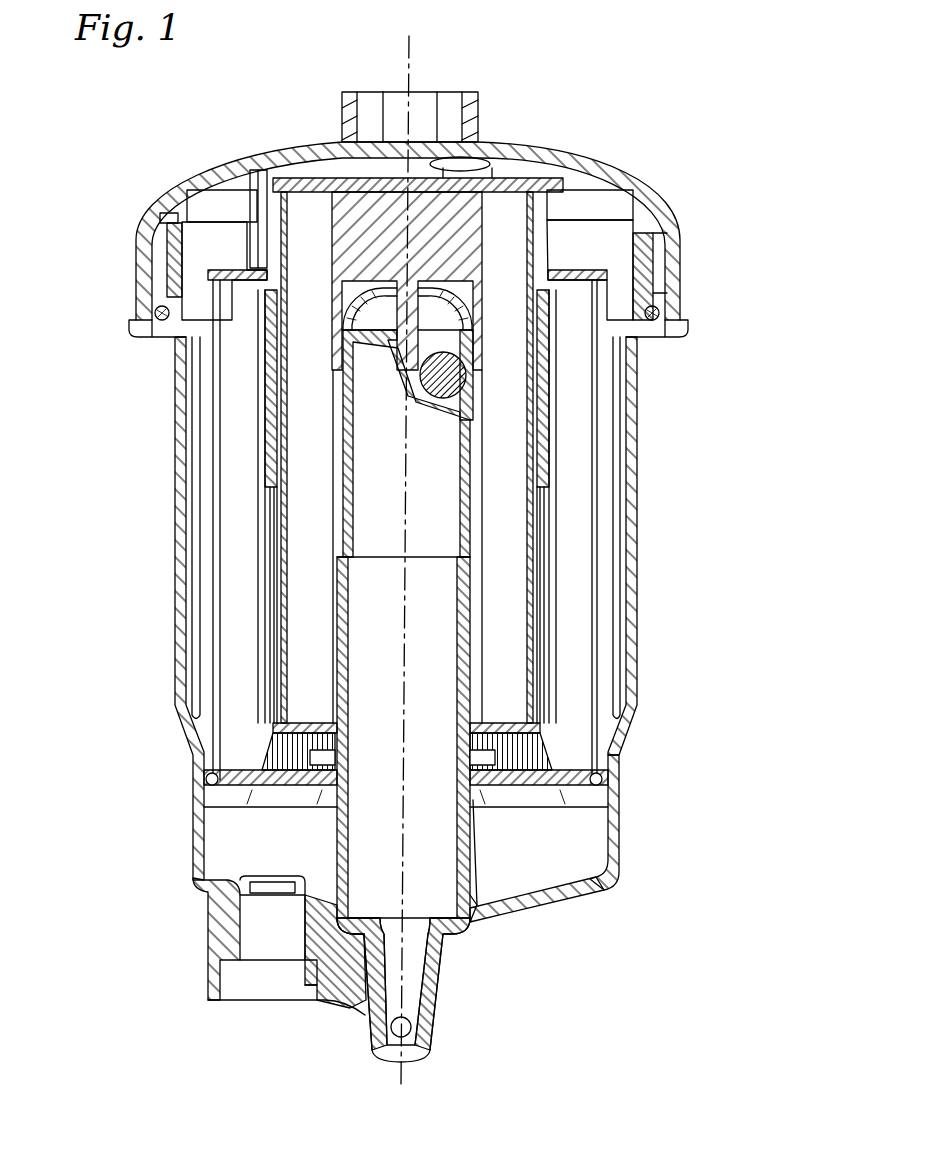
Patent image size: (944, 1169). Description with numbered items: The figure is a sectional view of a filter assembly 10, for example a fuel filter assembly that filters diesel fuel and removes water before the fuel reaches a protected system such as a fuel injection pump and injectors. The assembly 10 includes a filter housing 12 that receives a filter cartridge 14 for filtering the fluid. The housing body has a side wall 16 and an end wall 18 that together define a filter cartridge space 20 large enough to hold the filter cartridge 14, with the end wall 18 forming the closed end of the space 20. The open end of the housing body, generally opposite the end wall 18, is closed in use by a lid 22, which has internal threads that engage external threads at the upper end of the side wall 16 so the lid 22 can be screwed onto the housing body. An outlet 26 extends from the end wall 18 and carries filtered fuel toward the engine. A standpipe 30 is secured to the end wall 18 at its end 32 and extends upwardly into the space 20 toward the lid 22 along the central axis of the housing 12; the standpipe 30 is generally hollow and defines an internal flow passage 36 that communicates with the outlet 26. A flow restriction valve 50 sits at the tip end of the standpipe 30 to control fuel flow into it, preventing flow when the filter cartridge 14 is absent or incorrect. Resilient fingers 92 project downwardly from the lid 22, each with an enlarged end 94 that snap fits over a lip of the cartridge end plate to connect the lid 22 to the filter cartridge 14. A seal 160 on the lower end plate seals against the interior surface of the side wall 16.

The filter assembly 10 is at (700, 590).
The filter housing 12 is at (645, 518).
The filter cartridge 14 is at (226, 576).
The side wall 16 is at (175, 435).
The end wall 18 is at (515, 913).
The filter cartridge space 20 is at (590, 845).
The lid 22 is at (582, 160).
The outlet 26 is at (373, 1017).
The standpipe 30 is at (478, 825).
The end of standpipe 32 is at (462, 910).
The internal flow passage 36 is at (430, 643).
The flow restriction valve 50 is at (505, 372).
The resilient fingers 92 is at (257, 207).
The enlarged end 94 is at (255, 268).
The seal 160 is at (600, 795).